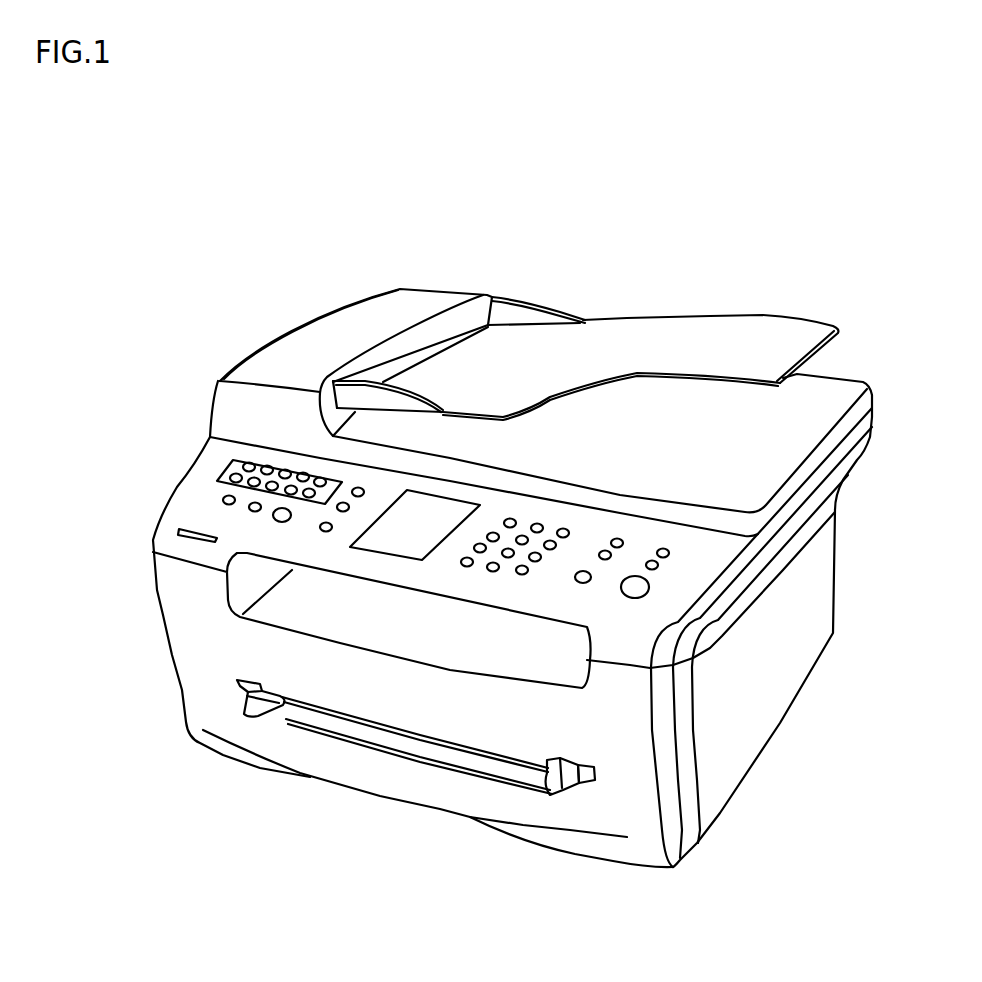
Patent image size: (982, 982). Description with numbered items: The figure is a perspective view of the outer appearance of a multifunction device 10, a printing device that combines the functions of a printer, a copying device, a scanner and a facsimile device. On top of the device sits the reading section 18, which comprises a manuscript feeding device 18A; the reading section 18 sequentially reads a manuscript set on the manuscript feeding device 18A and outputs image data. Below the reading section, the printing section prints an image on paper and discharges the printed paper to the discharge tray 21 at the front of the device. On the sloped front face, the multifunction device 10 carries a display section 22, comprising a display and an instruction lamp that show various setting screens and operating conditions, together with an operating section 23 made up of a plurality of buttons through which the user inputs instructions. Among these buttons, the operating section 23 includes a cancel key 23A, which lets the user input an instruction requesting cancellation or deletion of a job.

The multifunction device 10 is at (652, 204).
The reading section 18 is at (282, 293).
The manuscript feeding device 18A is at (412, 298).
The discharge tray 21 is at (395, 628).
The display section 22 is at (405, 538).
The operating section 23 is at (460, 593).
The cancel key 23A is at (574, 575).